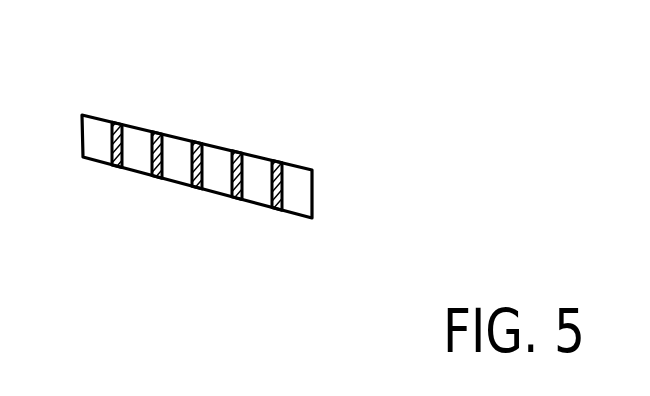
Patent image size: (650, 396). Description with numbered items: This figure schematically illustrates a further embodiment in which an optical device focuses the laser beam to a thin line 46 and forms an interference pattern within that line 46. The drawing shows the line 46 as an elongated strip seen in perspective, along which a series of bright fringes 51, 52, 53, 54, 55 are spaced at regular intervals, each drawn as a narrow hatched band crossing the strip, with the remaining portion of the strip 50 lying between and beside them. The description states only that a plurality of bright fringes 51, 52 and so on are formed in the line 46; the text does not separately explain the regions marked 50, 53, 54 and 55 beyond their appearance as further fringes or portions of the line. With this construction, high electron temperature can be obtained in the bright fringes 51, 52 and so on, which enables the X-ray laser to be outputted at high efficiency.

The line 46 is at (214, 148).
The substrate 50 is at (82, 115).
The bright fringe 51 is at (114, 122).
The bright fringe 52 is at (155, 132).
The third electrode strip 53 is at (197, 145).
The fourth electrode strip 54 is at (235, 153).
The fifth electrode strip 55 is at (285, 161).